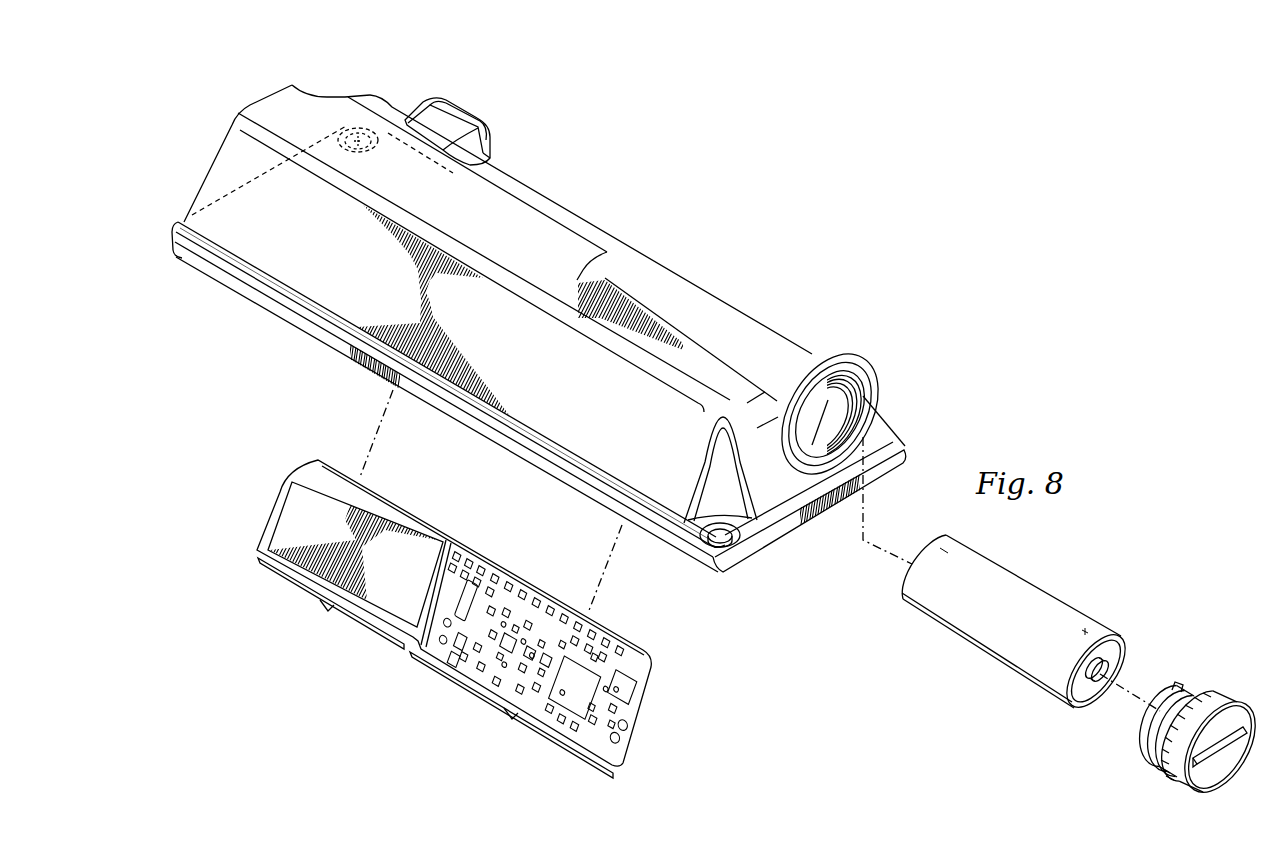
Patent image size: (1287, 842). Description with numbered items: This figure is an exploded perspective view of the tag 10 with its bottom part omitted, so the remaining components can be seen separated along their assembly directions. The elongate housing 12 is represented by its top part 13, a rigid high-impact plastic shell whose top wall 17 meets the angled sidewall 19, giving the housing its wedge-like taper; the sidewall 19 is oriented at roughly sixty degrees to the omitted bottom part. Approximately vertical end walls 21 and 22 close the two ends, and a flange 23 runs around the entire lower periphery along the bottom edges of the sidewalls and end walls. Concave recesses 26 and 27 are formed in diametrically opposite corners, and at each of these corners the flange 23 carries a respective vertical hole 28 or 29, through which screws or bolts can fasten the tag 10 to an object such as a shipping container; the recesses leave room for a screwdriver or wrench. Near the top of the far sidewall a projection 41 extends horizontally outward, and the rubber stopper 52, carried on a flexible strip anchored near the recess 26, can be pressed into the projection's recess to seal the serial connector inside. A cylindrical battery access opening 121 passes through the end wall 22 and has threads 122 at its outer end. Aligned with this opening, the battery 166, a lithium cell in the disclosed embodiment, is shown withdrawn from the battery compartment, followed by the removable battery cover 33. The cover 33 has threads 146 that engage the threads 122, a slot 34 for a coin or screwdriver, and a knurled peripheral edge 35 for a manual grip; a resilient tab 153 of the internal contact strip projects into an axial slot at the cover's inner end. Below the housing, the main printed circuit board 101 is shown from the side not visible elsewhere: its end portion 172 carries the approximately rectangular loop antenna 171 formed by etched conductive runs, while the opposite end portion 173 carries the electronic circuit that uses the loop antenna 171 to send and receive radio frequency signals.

The tag 10 is at (628, 178).
The housing 12 is at (678, 268).
The top part 13 is at (752, 325).
The top wall 17 is at (458, 212).
The sidewall 19 is at (255, 262).
The end wall 21 is at (218, 150).
The end wall 22 is at (782, 497).
The flange 23 is at (485, 440).
The concave recess 26 is at (333, 96).
The concave recess 27 is at (712, 455).
The vertical hole 28 is at (348, 128).
The vertical hole 29 is at (720, 527).
The battery cover 33 is at (1225, 773).
The slot 34 is at (1240, 750).
The knurled peripheral edge 35 is at (1220, 690).
The projection 41 is at (458, 128).
The rubber stopper 52 is at (445, 100).
The main printed circuit board 101 is at (493, 558).
The battery access opening 121 is at (840, 418).
The threads 122 is at (850, 400).
The threads 146 is at (1165, 768).
The resilient tab 153 is at (1176, 686).
The battery 166 is at (992, 660).
The loop antenna 171 is at (278, 512).
The end portion 172 is at (331, 603).
The end portion 173 is at (511, 715).